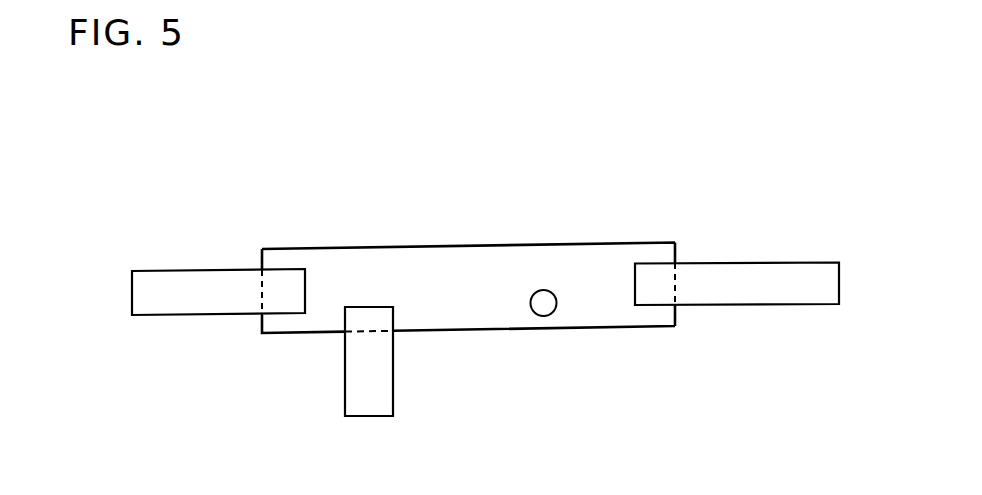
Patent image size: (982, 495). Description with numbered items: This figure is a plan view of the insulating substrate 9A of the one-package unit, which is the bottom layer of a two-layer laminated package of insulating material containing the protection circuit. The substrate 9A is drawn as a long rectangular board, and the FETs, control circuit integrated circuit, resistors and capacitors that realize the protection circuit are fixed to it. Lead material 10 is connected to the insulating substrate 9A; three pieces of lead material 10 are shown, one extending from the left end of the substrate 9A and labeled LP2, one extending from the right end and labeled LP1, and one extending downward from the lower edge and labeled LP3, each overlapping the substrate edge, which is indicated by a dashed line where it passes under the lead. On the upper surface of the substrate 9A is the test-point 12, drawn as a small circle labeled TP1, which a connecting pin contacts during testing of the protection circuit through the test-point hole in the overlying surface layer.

The insulating substrate 9A is at (457, 262).
The lead material 10 is at (485, 331).
The test-point 12 is at (576, 263).
The test point label TP1 is at (557, 298).
The land pattern 1 LP1 is at (737, 303).
The land pattern 2 LP2 is at (218, 310).
The land pattern 3 LP3 is at (369, 378).